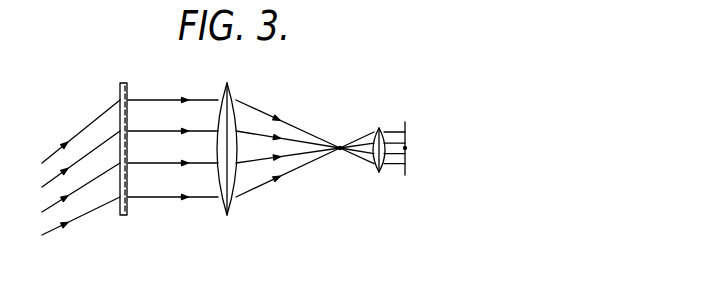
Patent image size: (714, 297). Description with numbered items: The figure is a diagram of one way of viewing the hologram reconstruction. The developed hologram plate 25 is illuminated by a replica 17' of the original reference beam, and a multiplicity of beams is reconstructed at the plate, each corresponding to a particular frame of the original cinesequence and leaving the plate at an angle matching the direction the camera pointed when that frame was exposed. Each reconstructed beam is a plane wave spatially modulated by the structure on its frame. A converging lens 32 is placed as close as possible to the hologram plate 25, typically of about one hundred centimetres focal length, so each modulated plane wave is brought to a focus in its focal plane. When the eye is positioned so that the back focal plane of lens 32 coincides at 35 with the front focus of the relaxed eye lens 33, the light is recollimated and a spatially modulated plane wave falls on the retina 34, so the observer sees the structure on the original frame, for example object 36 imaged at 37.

The replica of the reference beam 17' is at (90, 188).
The hologram plate 25 is at (123, 83).
The object 36 is at (128, 150).
The converging lens 32 is at (227, 85).
The coincidence point of back focal plane and eye front focus 35 is at (340, 148).
The eye lens 33 is at (378, 128).
The retina 34 is at (407, 123).
The image location of object on retina 37 is at (405, 148).